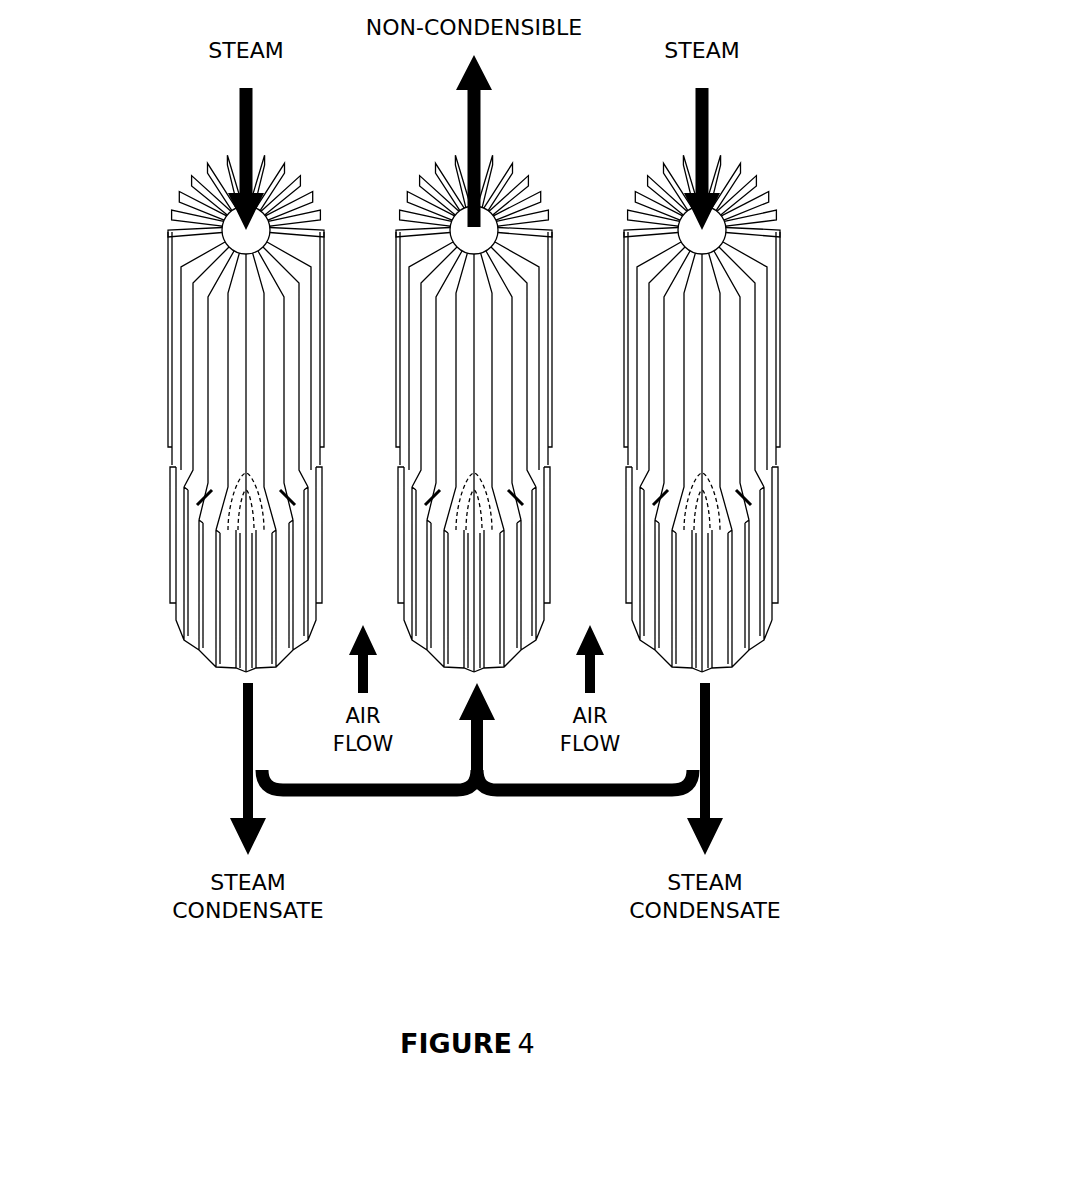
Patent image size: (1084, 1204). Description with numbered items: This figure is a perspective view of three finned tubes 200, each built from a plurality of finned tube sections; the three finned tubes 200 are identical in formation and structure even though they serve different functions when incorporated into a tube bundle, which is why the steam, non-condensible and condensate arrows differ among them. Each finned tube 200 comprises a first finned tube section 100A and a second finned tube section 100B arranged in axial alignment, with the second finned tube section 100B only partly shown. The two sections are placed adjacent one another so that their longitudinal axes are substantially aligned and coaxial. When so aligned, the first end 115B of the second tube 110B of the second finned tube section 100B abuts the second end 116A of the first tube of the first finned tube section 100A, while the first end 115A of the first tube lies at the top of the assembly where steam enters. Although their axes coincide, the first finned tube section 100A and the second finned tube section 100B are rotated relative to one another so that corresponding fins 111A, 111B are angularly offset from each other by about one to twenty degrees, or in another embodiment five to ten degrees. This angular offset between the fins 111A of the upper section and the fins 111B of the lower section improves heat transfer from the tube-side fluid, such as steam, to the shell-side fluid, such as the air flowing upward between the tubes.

The finned tube 200 is at (514, 174).
The first finned tube section 100A is at (495, 368).
The second finned tube section 100B is at (493, 561).
The fins of the first finned tube section 111A is at (787, 385).
The first end of the first tube 115A is at (786, 206).
The first end of the second tube 115B is at (829, 535).
The fins of the second finned tube section 111B is at (808, 585).
The second tube 110B is at (758, 572).
The second end of the first tube 116A is at (628, 507).